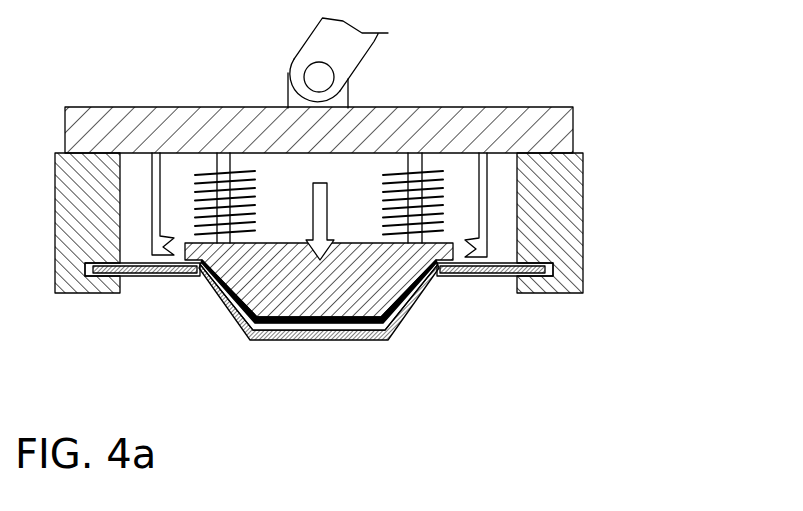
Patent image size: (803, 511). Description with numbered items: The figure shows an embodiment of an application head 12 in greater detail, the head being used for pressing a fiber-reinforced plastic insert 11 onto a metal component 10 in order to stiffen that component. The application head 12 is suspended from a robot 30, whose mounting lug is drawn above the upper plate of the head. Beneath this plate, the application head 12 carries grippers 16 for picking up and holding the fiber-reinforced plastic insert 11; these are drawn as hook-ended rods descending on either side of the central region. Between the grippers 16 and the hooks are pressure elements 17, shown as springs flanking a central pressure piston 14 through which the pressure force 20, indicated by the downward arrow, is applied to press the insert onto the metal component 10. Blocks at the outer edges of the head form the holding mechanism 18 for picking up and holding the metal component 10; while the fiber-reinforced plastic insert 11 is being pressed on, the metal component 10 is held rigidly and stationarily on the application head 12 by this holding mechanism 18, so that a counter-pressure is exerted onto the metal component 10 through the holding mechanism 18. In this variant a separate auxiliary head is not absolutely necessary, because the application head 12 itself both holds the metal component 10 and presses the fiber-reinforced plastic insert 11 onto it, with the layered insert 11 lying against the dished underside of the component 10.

The metal component 10 is at (428, 288).
The fiber-reinforced plastic insert 11 is at (400, 303).
The application head 12 is at (598, 235).
The pressure piston 14 is at (350, 300).
The gripper 16 is at (162, 253).
The pressure element 17 is at (222, 190).
The holding mechanism 18 is at (552, 202).
The pressure force 20 is at (318, 217).
The robot 30 is at (341, 48).